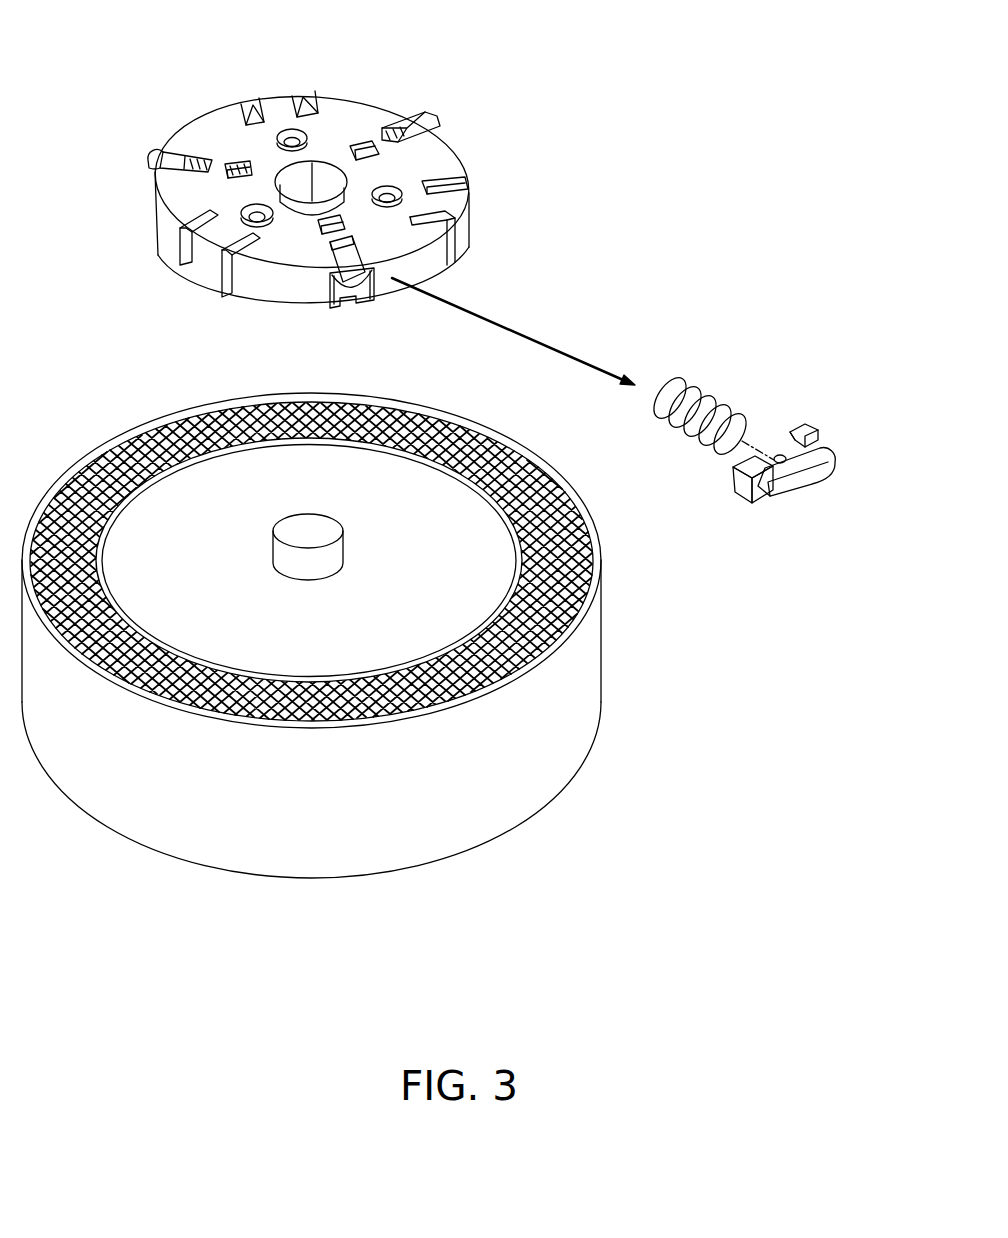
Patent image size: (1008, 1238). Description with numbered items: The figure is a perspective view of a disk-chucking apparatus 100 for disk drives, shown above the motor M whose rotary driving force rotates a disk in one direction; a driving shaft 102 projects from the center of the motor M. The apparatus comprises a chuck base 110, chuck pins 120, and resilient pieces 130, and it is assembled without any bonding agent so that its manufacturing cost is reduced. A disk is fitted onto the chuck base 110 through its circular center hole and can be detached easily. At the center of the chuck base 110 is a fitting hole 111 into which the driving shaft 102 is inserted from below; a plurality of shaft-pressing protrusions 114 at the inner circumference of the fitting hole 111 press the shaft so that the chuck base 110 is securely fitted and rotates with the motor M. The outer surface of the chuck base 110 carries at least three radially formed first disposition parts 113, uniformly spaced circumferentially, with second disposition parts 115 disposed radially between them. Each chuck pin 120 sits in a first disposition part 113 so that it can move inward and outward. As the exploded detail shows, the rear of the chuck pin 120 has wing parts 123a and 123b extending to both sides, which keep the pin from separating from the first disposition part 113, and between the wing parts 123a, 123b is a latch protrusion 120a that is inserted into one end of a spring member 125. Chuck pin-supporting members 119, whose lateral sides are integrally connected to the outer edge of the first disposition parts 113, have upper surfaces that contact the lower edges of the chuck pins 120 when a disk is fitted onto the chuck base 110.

The disk-chucking apparatus 100 is at (148, 114).
The chuck base 110 is at (220, 125).
The fitting hole 111 is at (323, 172).
The first disposition parts 113 is at (392, 130).
The shaft-pressing protrusions 114 is at (289, 172).
The second disposition parts 115 is at (310, 96).
The chuck pin-supporting members 119 is at (352, 300).
The chuck pin 120 is at (425, 118).
The latch protrusion 120a is at (777, 455).
The wing part 123a is at (740, 473).
The wing part 123b is at (800, 423).
The spring member 125 is at (393, 141).
The resilient pieces 130 is at (262, 105).
The driving shaft 102 is at (333, 552).
The motor M is at (342, 690).